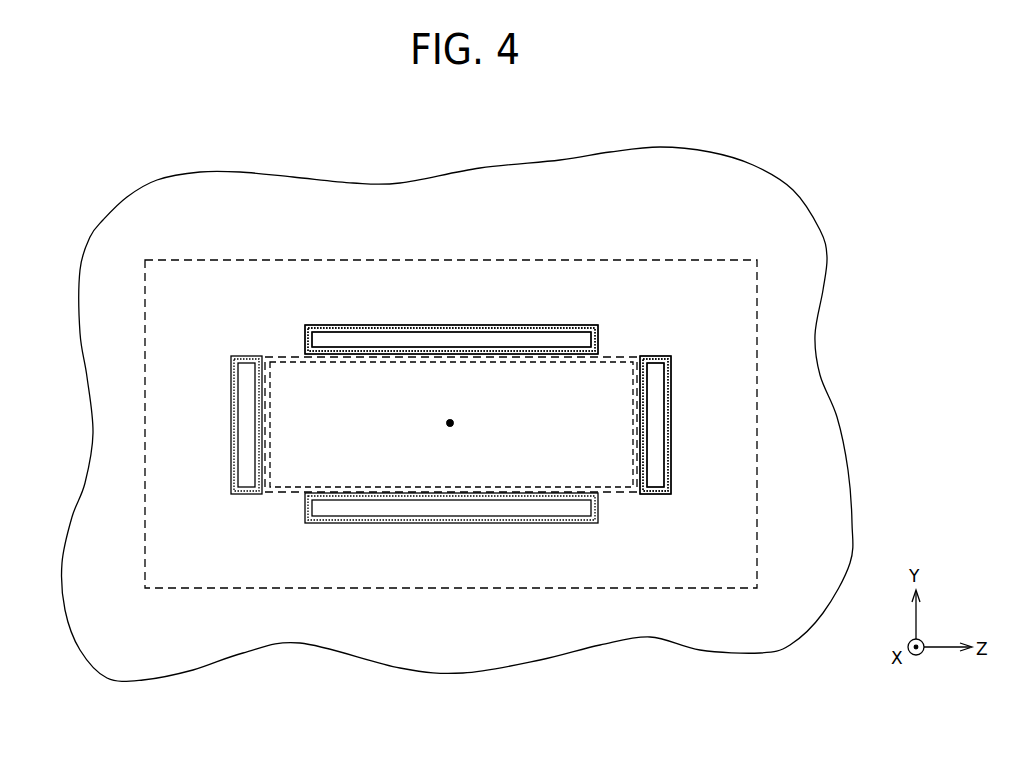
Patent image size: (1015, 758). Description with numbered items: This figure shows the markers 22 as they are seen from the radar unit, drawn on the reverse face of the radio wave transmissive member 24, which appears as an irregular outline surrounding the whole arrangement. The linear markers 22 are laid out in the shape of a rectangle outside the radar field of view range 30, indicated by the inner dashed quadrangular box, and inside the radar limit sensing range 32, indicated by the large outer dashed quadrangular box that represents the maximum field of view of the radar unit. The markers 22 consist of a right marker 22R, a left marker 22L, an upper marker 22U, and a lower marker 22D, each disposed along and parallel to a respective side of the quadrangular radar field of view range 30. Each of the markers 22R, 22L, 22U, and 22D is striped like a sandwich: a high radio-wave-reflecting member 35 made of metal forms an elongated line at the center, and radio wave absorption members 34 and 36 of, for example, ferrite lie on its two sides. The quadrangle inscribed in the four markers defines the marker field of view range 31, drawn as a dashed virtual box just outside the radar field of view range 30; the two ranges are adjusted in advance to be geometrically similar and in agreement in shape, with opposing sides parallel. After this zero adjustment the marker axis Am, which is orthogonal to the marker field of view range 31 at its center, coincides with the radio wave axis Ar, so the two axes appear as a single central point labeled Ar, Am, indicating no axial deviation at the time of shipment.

The radio wave transmissive member 24 is at (800, 194).
The markers 22 is at (453, 388).
The upper marker 22U is at (558, 324).
The lower marker 22D is at (566, 523).
The left marker 22L is at (246, 355).
The right marker 22R is at (662, 355).
The radar limit sensing range 32 is at (657, 259).
The marker field of view range 31 is at (283, 495).
The radar field of view range 30 is at (504, 487).
The radio wave absorption member 34 is at (335, 348).
The high radio-wave-reflecting member 35 is at (423, 342).
The radio wave absorption member 36 is at (474, 330).
The radio wave axis Ar is at (449, 421).
The marker axis Am is at (450, 423).